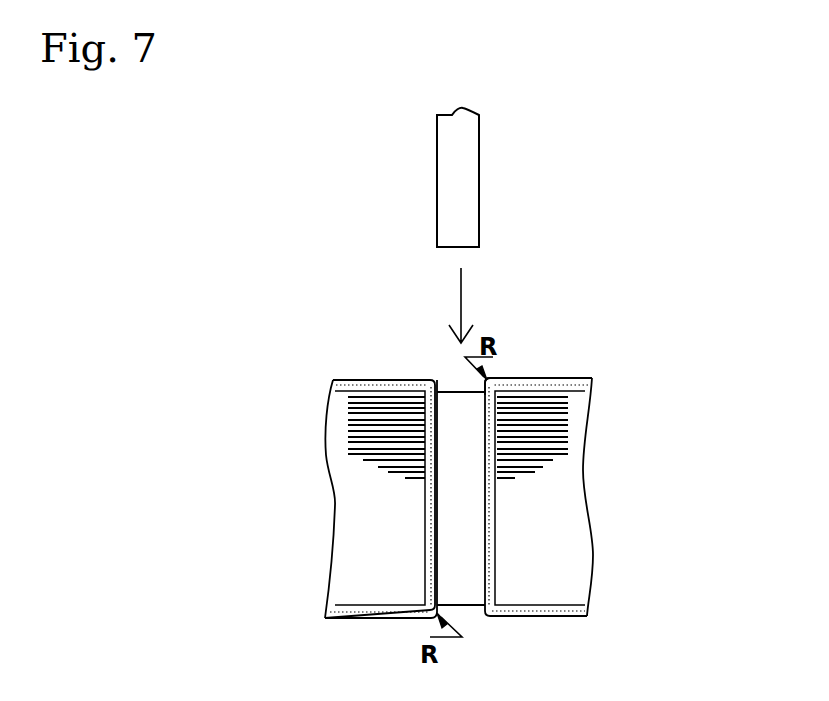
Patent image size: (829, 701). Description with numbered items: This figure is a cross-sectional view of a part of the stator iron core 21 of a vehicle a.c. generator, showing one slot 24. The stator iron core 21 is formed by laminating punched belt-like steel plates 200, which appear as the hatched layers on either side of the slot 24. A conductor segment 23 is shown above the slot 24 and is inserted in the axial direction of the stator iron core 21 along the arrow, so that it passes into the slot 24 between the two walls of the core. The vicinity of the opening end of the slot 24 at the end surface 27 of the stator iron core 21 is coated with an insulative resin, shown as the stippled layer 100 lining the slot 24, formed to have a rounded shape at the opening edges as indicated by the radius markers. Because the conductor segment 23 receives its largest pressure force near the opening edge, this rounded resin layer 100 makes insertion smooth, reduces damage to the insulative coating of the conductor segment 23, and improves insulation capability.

The conductor segment 23 is at (472, 169).
The end surface 27 is at (372, 382).
The slot 24 is at (452, 398).
The plated layer 100 is at (538, 380).
The belt-like steel plate 200 is at (567, 402).
The stator iron core 21 is at (558, 518).